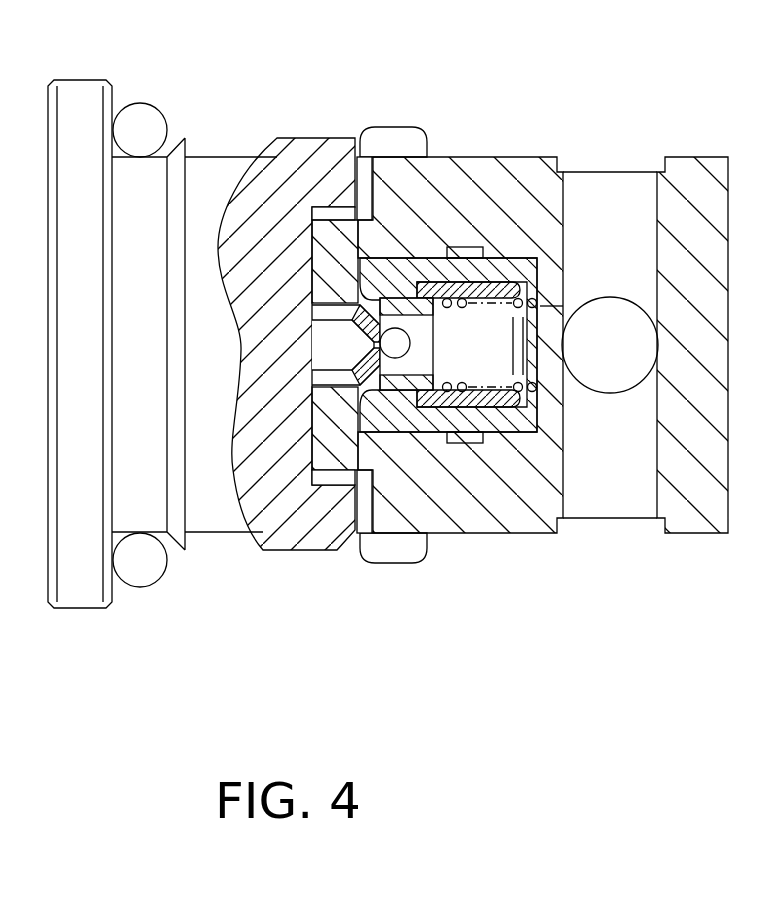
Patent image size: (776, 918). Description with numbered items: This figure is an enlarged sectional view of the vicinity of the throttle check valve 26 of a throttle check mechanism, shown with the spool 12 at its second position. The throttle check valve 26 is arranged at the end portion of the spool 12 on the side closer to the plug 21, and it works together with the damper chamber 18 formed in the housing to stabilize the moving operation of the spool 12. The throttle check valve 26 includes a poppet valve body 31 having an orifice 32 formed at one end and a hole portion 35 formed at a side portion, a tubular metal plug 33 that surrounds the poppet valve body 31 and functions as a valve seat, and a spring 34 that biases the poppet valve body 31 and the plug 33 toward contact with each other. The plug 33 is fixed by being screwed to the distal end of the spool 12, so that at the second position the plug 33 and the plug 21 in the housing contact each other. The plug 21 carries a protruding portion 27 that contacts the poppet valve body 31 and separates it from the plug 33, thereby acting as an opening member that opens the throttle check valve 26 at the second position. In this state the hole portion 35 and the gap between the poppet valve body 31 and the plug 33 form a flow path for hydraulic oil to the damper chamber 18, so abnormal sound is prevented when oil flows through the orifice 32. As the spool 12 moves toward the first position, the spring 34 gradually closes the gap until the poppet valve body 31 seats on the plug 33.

The spool 12 is at (537, 512).
The damper chamber 18 is at (397, 137).
The plug 21 is at (217, 540).
The throttle check valve 26 is at (437, 228).
The protruding portion 27 is at (330, 400).
The poppet valve body 31 is at (477, 408).
The orifice 32 is at (336, 341).
The plug 33 is at (320, 237).
The spring 34 is at (463, 306).
The hole portion 35 is at (400, 303).